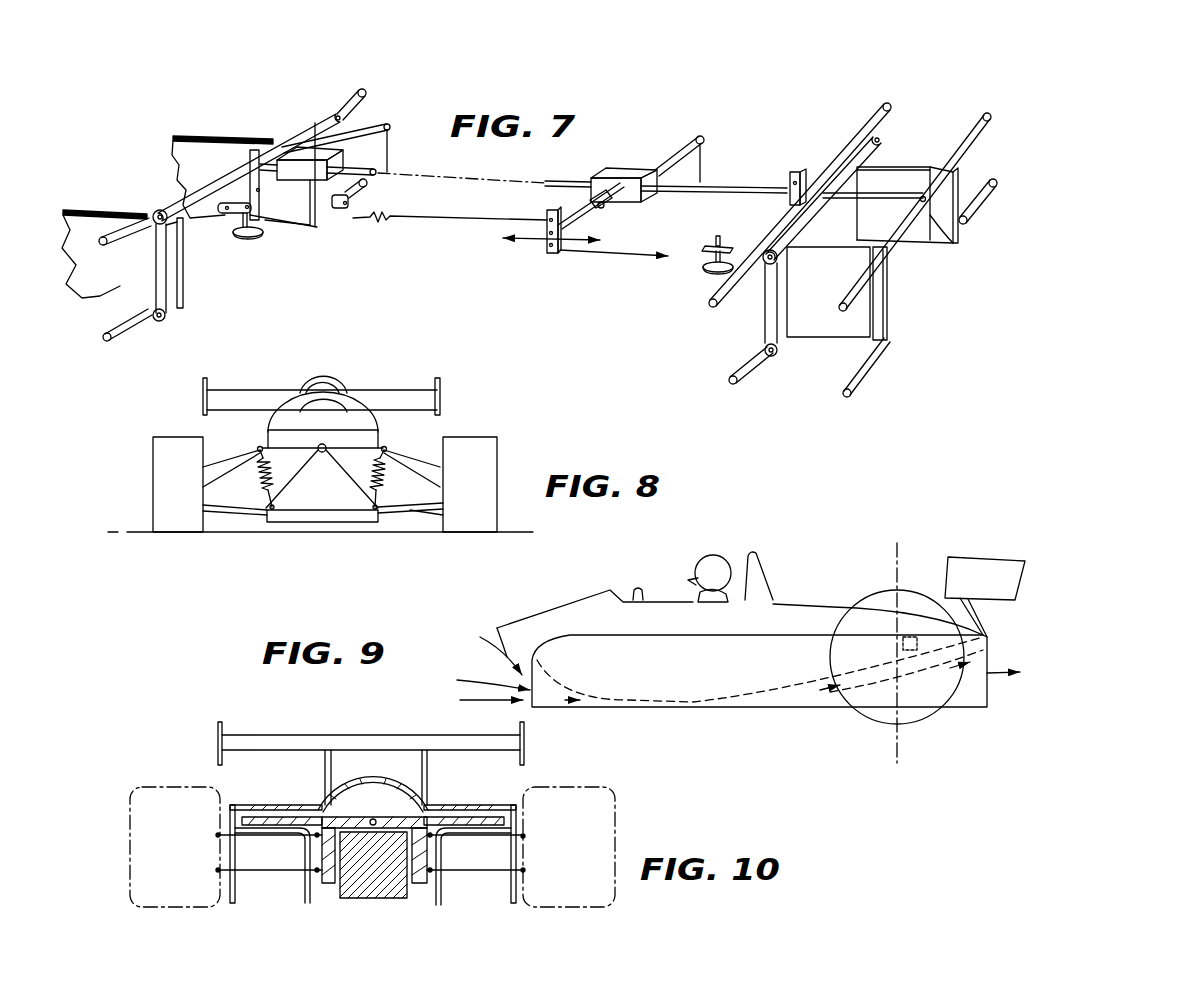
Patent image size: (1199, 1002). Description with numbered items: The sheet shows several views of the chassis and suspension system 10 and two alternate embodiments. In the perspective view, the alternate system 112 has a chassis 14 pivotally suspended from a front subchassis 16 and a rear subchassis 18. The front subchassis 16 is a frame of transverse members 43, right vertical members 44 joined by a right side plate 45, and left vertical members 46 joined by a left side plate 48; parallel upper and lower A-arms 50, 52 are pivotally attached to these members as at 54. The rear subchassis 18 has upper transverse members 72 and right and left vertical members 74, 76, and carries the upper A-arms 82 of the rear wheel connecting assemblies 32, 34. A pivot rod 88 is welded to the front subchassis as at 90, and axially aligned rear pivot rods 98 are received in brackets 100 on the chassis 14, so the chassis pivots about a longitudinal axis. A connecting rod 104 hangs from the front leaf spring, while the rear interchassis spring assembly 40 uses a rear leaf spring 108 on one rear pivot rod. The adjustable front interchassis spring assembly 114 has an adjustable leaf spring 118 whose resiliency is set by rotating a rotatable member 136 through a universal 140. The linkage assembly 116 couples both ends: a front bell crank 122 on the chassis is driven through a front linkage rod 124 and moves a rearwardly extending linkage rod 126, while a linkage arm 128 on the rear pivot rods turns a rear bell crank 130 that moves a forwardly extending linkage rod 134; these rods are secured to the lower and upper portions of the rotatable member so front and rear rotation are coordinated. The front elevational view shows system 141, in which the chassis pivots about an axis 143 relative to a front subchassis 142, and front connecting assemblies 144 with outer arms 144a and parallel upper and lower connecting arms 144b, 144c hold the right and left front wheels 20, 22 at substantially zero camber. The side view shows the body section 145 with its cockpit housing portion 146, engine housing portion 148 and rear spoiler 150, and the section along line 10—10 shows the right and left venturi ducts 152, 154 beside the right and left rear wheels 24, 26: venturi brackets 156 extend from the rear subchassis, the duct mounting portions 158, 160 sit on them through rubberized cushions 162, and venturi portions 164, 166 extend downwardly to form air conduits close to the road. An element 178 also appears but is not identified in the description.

In FIG. 9, the chassis and suspension system 10 is at (980, 543).
In FIG. 7, the chassis 14 is at (253, 247).
In FIG. 8, the chassis 14 is at (355, 440).
In FIG. 7, the front subchassis 16 is at (895, 152).
In FIG. 7, the rear subchassis 18 is at (245, 128).
In FIG. 10, the rear subchassis 18 is at (370, 812).
In FIG. 8, the right front wheel 20 is at (170, 507).
In FIG. 8, the left front wheel 22 is at (473, 462).
In FIG. 10, the right rear wheel 24 is at (173, 885).
In FIG. 10, the left rear wheel 26 is at (595, 845).
In FIG. 10, the right rear wheel connecting assembly 32 is at (275, 848).
In FIG. 10, the left rear wheel connecting assembly 34 is at (483, 848).
In FIG. 7, the rear interchassis spring assembly 40 is at (373, 108).
In FIG. 7, the transverse members 43 is at (953, 240).
In FIG. 7, the right vertical members 44 is at (890, 323).
In FIG. 7, the right side plate 45 is at (823, 307).
In FIG. 7, the left vertical members 46 is at (960, 183).
In FIG. 7, the left side plate 48 is at (903, 180).
In FIG. 7, the upper A-arms 50 is at (872, 115).
In FIG. 7, the lower A-arms 52 is at (745, 362).
In FIG. 7, the pivotal attachment 54 is at (768, 265).
In FIG. 7, the upper transverse members 72 is at (291, 128).
In FIG. 7, the right vertical member 74 is at (178, 303).
In FIG. 7, the left vertical member 76 is at (312, 218).
In FIG. 7, the upper A-arms 82 is at (362, 92).
In FIG. 7, the pivot rod 88 is at (850, 197).
In FIG. 7, the weld connection 90 is at (924, 203).
In FIG. 10, the rear pivot rods 98 is at (400, 815).
In FIG. 10, the brackets 100 is at (378, 822).
In FIG. 7, the connecting rod 104 is at (702, 182).
In FIG. 7, the rear leaf spring 108 is at (365, 137).
In FIG. 7, the chassis and suspension system 112 is at (648, 148).
In FIG. 7, the adjustable front interchassis spring assembly 114 is at (676, 150).
In FIG. 7, the linkage assembly 116 is at (565, 257).
In FIG. 7, the adjustable leaf spring 118 is at (714, 208).
In FIG. 7, the front bell crank 122 is at (706, 248).
In FIG. 7, the front linkage rod 124 is at (780, 195).
In FIG. 7, the rearwardly extending linkage rod 126 is at (614, 255).
In FIG. 7, the linkage arm 128 is at (257, 180).
In FIG. 7, the rear bell crank 130 is at (226, 214).
In FIG. 7, the forwardly extending linkage rod 134 is at (372, 225).
In FIG. 7, the rotatable member 136 is at (547, 233).
In FIG. 7, the universal 140 is at (607, 207).
In FIG. 8, the chassis and suspension system 141 is at (200, 422).
In FIG. 8, the front subchassis 142 is at (313, 482).
In FIG. 10, the front subchassis 142 is at (370, 770).
In FIG. 8, the pivot axis 143 is at (327, 453).
In FIG. 8, the front connecting assemblies 144 is at (230, 468).
In FIG. 8, the outer arms 144a is at (247, 457).
In FIG. 8, the upper connecting arm 144b is at (350, 467).
In FIG. 8, the lower connecting arm 144c is at (423, 513).
In FIG. 9, the body section 145 is at (570, 628).
In FIG. 9, the cockpit housing portion 146 is at (658, 620).
In FIG. 8, the engine housing portion 148 is at (287, 405).
In FIG. 10, the engine housing portion 148 is at (355, 778).
In FIG. 8, the rear spoiler 150 is at (230, 395).
In FIG. 9, the rear spoiler 150 is at (983, 577).
In FIG. 10, the rear spoiler 150 is at (250, 735).
In FIG. 10, the right venturi duct 152 is at (280, 802).
In FIG. 9, the left venturi duct 154 is at (700, 667).
In FIG. 10, the left venturi duct 154 is at (492, 805).
In FIG. 10, the venturi brackets 156 is at (265, 830).
In FIG. 10, the mounting portion 158 is at (295, 806).
In FIG. 10, the mounting portion 160 is at (455, 806).
In FIG. 10, the rubberized cushions 162 is at (257, 806).
In FIG. 10, the venturi portion 164 is at (306, 885).
In FIG. 10, the venturi portion 166 is at (440, 855).
In FIG. 7, the pivot pin 178 is at (573, 214).